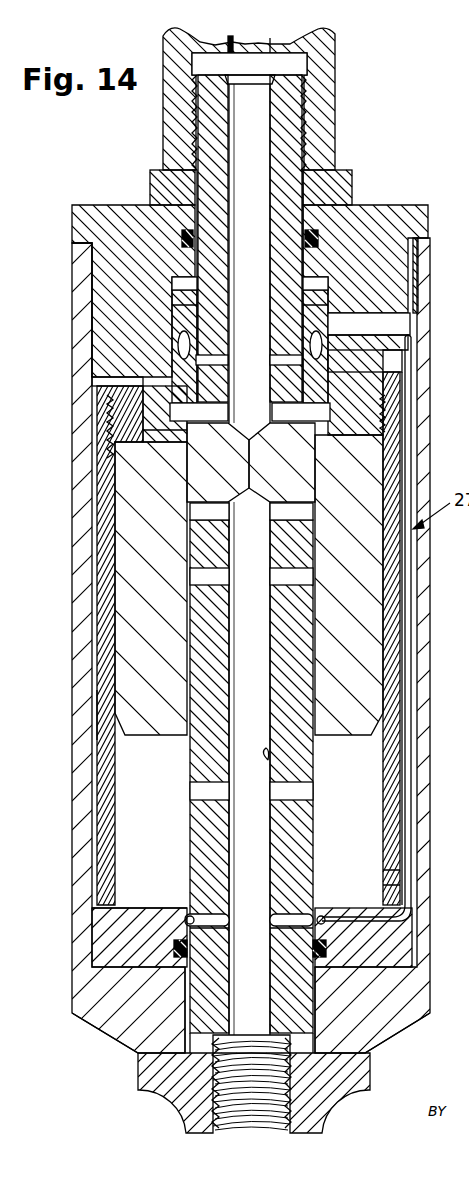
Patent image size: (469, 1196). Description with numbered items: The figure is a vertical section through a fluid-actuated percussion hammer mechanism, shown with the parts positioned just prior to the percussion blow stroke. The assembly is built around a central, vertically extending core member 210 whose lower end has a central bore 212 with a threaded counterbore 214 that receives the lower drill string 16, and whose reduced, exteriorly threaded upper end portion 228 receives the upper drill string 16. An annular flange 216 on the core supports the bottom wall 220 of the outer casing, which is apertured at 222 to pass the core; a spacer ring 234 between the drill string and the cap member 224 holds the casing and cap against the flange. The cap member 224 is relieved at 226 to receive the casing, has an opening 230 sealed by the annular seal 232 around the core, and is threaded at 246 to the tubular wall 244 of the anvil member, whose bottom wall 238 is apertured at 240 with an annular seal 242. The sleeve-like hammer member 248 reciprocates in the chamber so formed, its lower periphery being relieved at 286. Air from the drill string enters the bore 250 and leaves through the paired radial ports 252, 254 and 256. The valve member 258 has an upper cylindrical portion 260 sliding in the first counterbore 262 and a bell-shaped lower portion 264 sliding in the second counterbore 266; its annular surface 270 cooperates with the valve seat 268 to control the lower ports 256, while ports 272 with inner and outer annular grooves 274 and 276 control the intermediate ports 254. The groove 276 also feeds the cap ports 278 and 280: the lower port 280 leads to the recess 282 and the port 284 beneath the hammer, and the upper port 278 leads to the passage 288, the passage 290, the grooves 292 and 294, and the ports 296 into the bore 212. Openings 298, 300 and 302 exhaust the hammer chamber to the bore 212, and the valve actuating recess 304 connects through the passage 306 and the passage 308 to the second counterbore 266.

The drill string 16 is at (333, 50).
The upper end portion of the core member 228 is at (288, 153).
The bore 250 is at (268, 117).
The spacer ring or washer 234 is at (158, 178).
The annular seal 232 is at (318, 226).
The cap member 224 is at (86, 236).
The opening 230 is at (195, 226).
The first counterbore 262 is at (417, 262).
The relieved periphery 226 is at (92, 293).
The valve member 258 is at (338, 302).
The upper hollow cylindrical portion 260 is at (180, 302).
The upper port 278 is at (383, 334).
The lower port 280 is at (383, 365).
The second counterbore 266 is at (350, 384).
The bell-shaped lower portion 264 is at (388, 413).
The radially extending passage 308 is at (100, 378).
The threaded engagement 246 is at (108, 420).
The relieved outer periphery 286 is at (110, 740).
The tubular wall 244 is at (108, 714).
The valve actuating recess 304 is at (92, 557).
The longitudinally extending recess 282 is at (400, 588).
The passage 288 is at (413, 455).
The passage 290 is at (375, 921).
The hammer member 248 is at (182, 735).
The annular shoulder or valve seat 268 is at (186, 425).
The cooperating annular surface 270 is at (323, 434).
The lower ports 256 is at (300, 408).
The intermediate ports 254 is at (282, 357).
The upper ports 252 is at (280, 282).
The ports 272 is at (325, 382).
The annular groove 276 is at (322, 318).
The annular groove 274 is at (312, 340).
The core member 210 is at (185, 852).
The openings 298 is at (229, 524).
The openings 300 is at (229, 592).
The openings 302 is at (229, 803).
The central bore 212 is at (268, 760).
The radially extending port 284 is at (390, 878).
The ports 296 is at (223, 913).
The annular groove 292 is at (324, 916).
The annular groove 294 is at (310, 922).
The aperture 240 is at (312, 937).
The annular seal 242 is at (312, 956).
The bottom wall of the anvil member 238 is at (112, 948).
The radially extending passage 306 is at (95, 912).
The bottom wall of the casing 220 is at (130, 1038).
The central aperture 222 is at (388, 1033).
The annular flange 216 is at (348, 1092).
The threaded counterbore 214 is at (232, 1134).